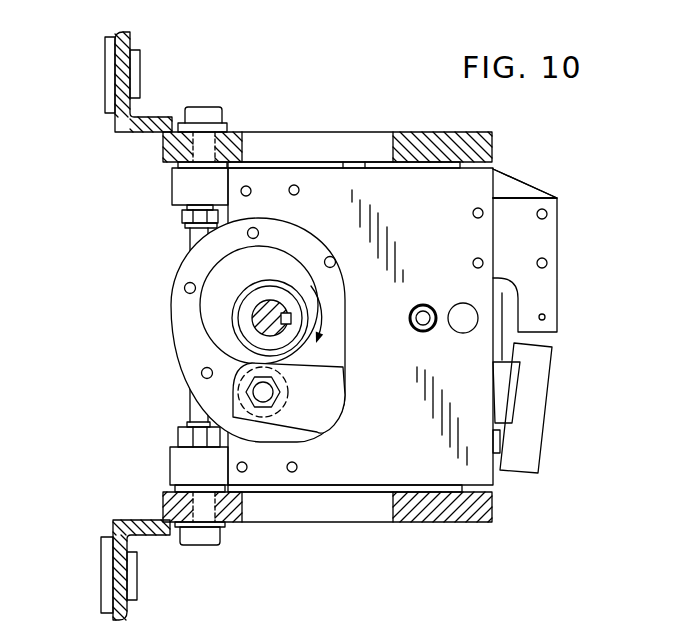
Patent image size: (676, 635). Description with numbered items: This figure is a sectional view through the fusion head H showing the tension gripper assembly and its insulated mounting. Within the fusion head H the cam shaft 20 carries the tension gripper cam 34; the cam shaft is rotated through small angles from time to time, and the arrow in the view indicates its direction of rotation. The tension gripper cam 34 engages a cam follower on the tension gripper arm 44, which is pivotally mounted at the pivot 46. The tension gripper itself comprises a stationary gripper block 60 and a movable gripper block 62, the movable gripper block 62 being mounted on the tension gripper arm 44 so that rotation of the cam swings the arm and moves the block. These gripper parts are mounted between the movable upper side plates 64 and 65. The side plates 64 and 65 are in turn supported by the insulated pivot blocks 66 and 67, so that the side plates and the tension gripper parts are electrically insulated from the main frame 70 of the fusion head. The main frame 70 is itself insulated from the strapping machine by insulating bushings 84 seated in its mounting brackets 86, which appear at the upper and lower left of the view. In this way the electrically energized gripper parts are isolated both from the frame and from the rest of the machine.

The cam shaft 20 is at (252, 318).
The tension gripper cam 34 is at (224, 274).
The tension gripper arm 44 is at (331, 398).
The pivot 46 is at (449, 301).
The stationary gripper block 60 is at (547, 236).
The movable gripper block 62 is at (538, 387).
The upper side plate 64 is at (523, 191).
The upper side plate 65 is at (493, 183).
The insulated pivot block 66 is at (172, 184).
The insulated pivot block 67 is at (170, 463).
The main frame 70 is at (425, 128).
The insulating bushing 84 is at (142, 78).
The mounting bracket 86 is at (123, 33).
The fusion head H is at (379, 118).